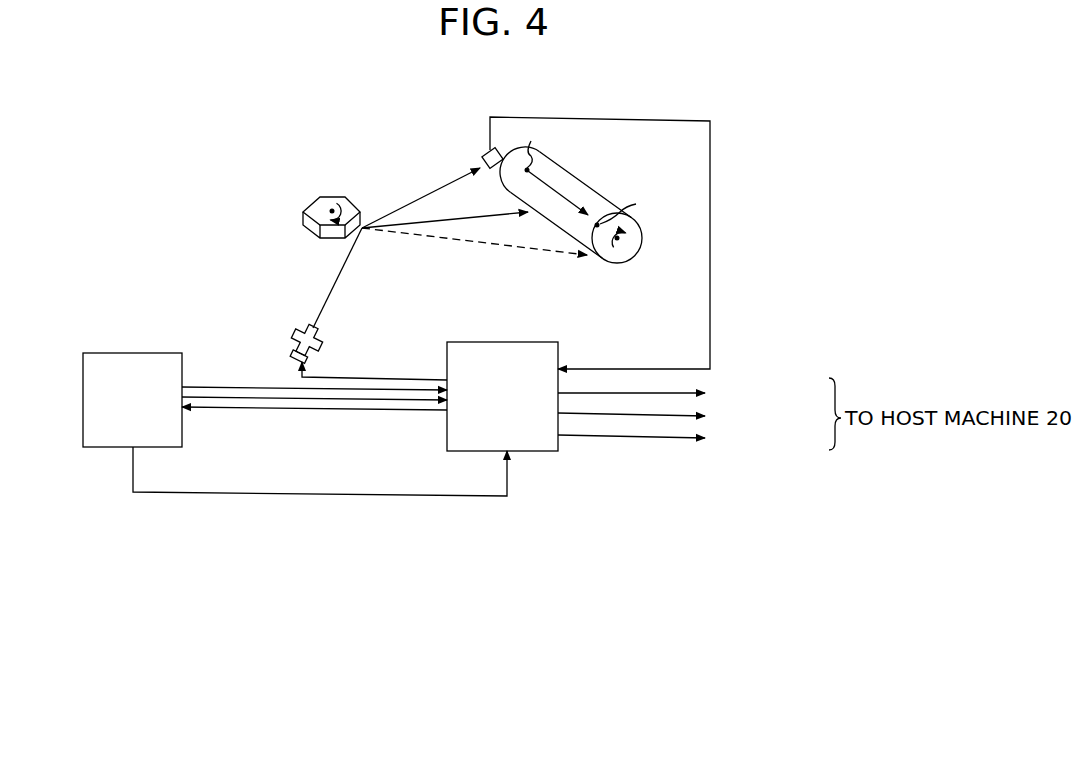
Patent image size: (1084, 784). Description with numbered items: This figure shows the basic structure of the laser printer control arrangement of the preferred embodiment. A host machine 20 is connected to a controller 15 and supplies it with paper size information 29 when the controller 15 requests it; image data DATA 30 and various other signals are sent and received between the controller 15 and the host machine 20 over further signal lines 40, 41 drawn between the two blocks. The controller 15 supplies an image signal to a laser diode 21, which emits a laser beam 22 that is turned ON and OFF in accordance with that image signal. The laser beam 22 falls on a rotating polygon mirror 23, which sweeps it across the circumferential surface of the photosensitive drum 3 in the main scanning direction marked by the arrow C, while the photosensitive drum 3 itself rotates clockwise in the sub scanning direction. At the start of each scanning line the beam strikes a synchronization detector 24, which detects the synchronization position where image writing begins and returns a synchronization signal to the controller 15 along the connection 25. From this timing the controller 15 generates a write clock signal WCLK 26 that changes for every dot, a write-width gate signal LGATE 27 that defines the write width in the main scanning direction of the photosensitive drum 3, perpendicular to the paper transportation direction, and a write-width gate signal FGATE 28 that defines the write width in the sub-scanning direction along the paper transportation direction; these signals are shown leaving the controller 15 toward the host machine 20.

The photosensitive drum 3 is at (602, 186).
The controller 15 is at (534, 342).
The host machine 20 is at (142, 353).
The laser diode 21 is at (300, 332).
The laser beam 22 is at (338, 275).
The polygon mirror 23 is at (337, 197).
The synchronization detector 24 is at (486, 150).
The beam detection signal line 25 is at (710, 245).
The write clock signal WCLK 26 is at (685, 395).
The write-width gate signal LGATE 27 is at (686, 416).
The write-width gate signal FGATE 28 is at (686, 442).
The paper size information 29 is at (240, 407).
The image data DATA 30 is at (263, 494).
The signal line 40 is at (209, 388).
The signal line 41 is at (254, 387).